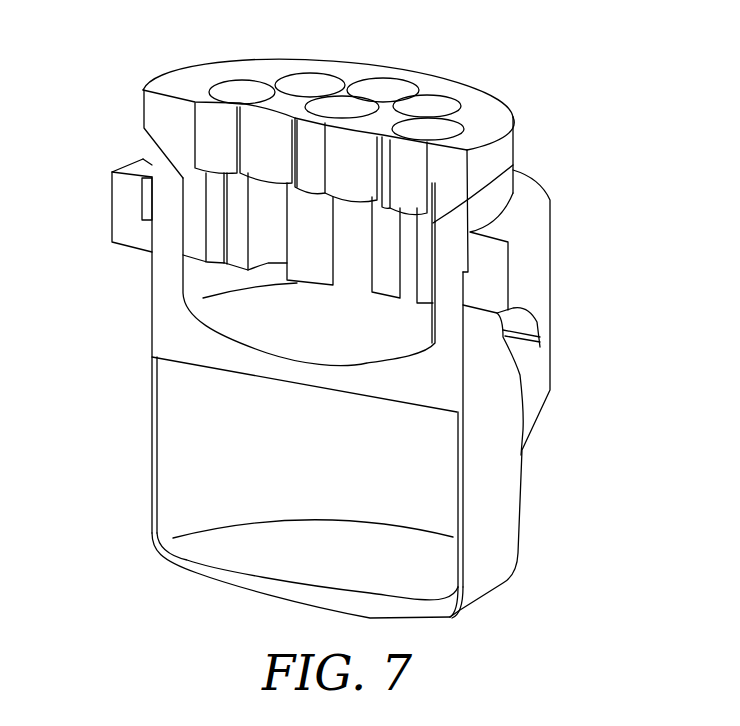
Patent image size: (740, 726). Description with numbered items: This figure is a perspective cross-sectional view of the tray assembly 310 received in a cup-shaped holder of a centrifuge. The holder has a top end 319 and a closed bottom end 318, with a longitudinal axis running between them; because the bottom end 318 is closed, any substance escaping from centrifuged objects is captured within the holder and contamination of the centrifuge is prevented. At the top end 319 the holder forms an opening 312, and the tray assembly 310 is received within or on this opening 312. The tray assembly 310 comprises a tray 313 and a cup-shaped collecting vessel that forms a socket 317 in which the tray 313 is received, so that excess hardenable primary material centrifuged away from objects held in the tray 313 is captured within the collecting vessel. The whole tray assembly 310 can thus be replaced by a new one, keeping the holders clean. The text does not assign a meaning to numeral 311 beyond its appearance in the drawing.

The tray assembly 310 is at (578, 68).
The container body 311 is at (453, 213).
The opening 312 is at (133, 170).
The tray 313 is at (458, 88).
The socket 317 is at (423, 255).
The bottom end 318 is at (450, 617).
The top end 319 is at (522, 283).